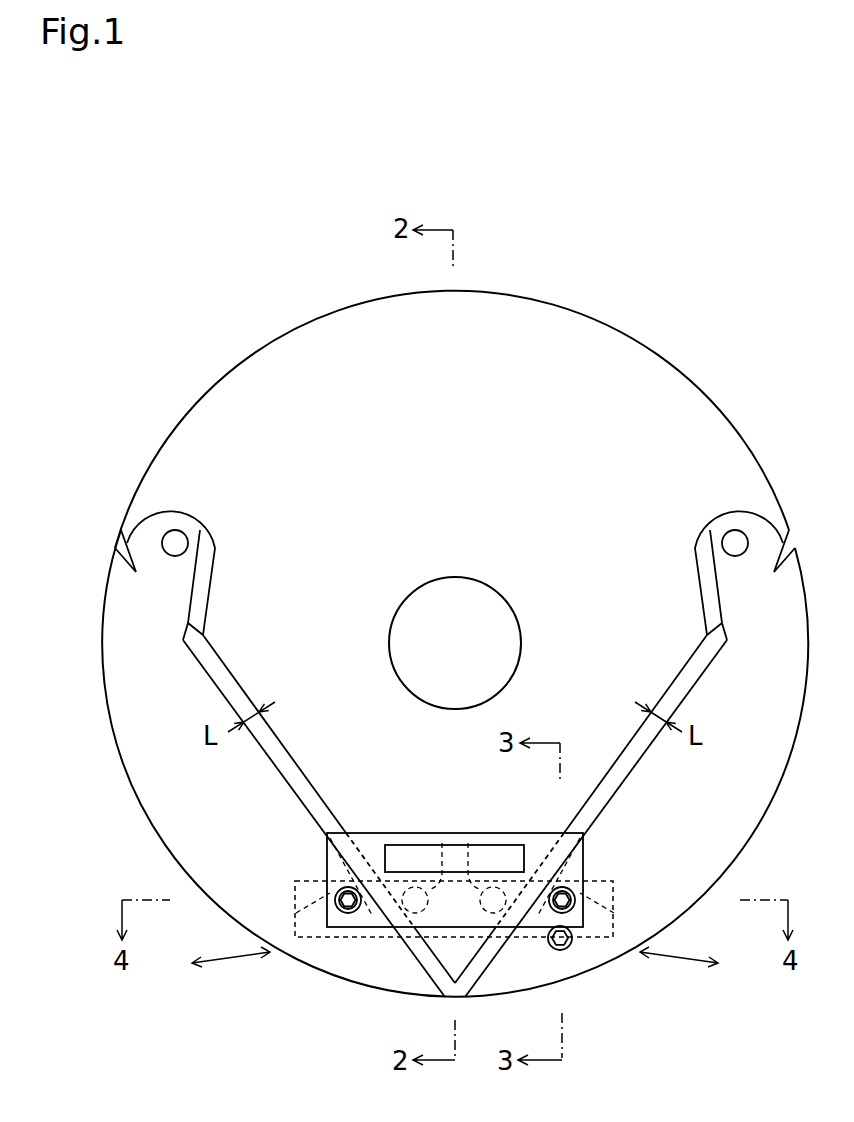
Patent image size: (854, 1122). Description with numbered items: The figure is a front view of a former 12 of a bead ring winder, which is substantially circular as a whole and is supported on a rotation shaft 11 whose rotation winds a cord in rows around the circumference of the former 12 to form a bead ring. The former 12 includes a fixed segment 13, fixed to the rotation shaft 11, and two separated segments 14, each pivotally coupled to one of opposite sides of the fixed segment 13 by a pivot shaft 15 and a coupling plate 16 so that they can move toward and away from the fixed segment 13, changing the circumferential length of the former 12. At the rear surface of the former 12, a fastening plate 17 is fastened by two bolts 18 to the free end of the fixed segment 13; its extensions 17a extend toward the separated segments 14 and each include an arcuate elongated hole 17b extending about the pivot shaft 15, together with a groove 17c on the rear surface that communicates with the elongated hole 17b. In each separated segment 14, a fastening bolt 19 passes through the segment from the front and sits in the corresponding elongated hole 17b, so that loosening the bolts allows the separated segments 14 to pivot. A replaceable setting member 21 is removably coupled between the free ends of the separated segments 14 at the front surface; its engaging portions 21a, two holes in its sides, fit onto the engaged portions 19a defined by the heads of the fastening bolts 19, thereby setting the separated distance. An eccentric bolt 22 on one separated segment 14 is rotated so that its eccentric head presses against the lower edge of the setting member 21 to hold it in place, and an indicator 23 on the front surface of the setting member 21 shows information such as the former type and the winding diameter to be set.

The rotation shaft 11 is at (455, 580).
The former 12 is at (594, 281).
The fixed segment 13 is at (618, 366).
The separated segments 14 is at (135, 683).
The pivot shaft 15 is at (167, 533).
The coupling plate 16 is at (190, 580).
The fastening plate 17 is at (456, 929).
The extensions 17a is at (325, 880).
The arcuate elongated hole 17b is at (296, 893).
The groove 17c is at (308, 937).
The bolts 18 is at (448, 843).
The fastening bolt 19 is at (340, 882).
The engaged portions 19a is at (408, 912).
The setting member 21 is at (413, 835).
The engaging portions 21a is at (348, 887).
The eccentric bolt 22 is at (560, 950).
The indicator 23 is at (490, 845).